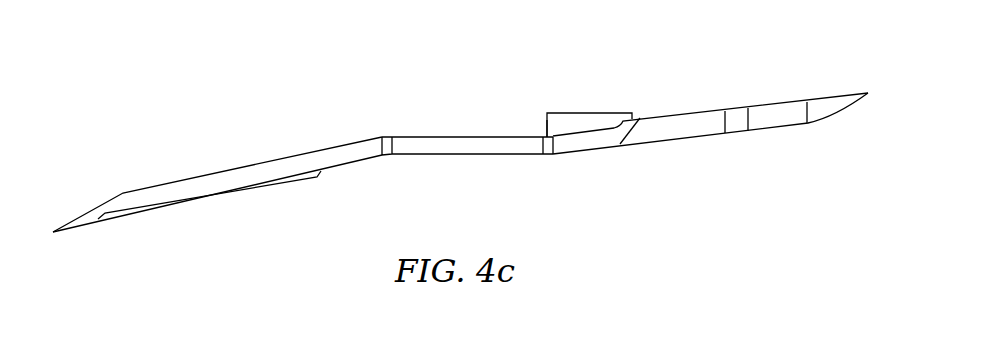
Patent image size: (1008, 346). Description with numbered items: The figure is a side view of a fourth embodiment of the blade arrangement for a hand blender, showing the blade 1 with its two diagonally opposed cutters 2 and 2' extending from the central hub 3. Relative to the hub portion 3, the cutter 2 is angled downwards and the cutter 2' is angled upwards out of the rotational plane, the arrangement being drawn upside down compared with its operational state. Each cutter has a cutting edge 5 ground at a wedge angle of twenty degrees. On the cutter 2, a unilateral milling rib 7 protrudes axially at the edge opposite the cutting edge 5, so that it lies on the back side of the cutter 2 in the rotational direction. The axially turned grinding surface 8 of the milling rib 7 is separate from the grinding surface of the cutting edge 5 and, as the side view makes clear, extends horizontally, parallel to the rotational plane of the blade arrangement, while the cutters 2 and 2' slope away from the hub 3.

The blade 1 is at (175, 142).
The cutter 2' is at (217, 153).
The cutter 2 is at (710, 134).
The hub 3 is at (418, 145).
The cutting edge 5 is at (725, 133).
The milling rib 7 is at (547, 118).
The grinding surface 8 is at (600, 113).